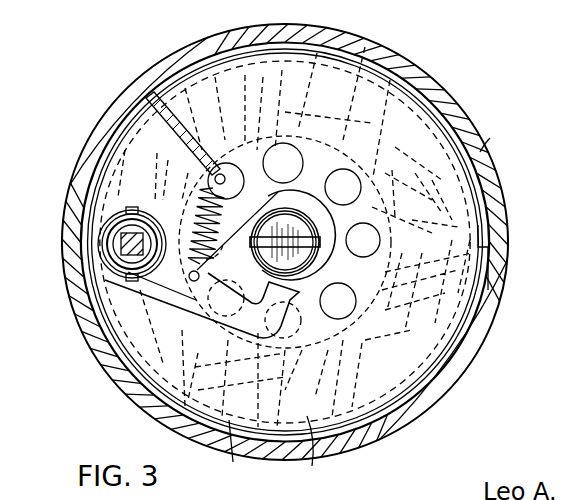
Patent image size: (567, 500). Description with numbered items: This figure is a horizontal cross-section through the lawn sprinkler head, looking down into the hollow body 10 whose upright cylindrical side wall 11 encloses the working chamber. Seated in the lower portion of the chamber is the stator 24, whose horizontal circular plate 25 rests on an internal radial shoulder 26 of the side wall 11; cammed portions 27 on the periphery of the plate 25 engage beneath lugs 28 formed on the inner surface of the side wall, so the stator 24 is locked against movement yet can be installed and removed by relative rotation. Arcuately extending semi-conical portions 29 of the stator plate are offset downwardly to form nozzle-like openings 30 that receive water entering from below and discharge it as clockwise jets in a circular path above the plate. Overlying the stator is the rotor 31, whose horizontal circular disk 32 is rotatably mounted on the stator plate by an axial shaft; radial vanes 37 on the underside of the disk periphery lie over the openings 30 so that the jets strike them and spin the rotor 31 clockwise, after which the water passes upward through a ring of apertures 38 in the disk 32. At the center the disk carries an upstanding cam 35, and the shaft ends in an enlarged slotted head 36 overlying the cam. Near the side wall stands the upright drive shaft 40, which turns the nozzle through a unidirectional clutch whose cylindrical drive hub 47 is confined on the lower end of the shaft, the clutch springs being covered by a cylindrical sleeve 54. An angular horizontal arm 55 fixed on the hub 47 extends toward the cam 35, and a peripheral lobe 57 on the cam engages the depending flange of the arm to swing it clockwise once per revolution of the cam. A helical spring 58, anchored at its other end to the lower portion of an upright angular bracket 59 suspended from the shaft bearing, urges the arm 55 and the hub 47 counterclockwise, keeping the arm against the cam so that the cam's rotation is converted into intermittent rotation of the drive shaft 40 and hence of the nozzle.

The hollow body 10 is at (450, 107).
The side wall 11 is at (393, 419).
The stator 24 is at (138, 407).
The circular plate 25 is at (205, 75).
The radial shoulder 26 is at (490, 268).
The cammed portions 27 is at (474, 212).
The lugs 28 is at (382, 73).
The semi-conical portions 29 is at (306, 80).
The nozzle-like openings 30 is at (231, 430).
The rotor 31 is at (522, 160).
The circular disk 32 is at (311, 445).
The cam 35 is at (256, 265).
The slotted head 36 is at (308, 262).
The radial vanes 37 is at (460, 334).
The apertures 38 is at (363, 240).
The drive shaft 40 is at (133, 241).
The drive hub 47 is at (106, 257).
The sleeve 54 is at (124, 210).
The arm 55 is at (168, 290).
The peripheral lobe 57 is at (283, 163).
The helical spring 58 is at (220, 226).
The bracket 59 is at (177, 131).